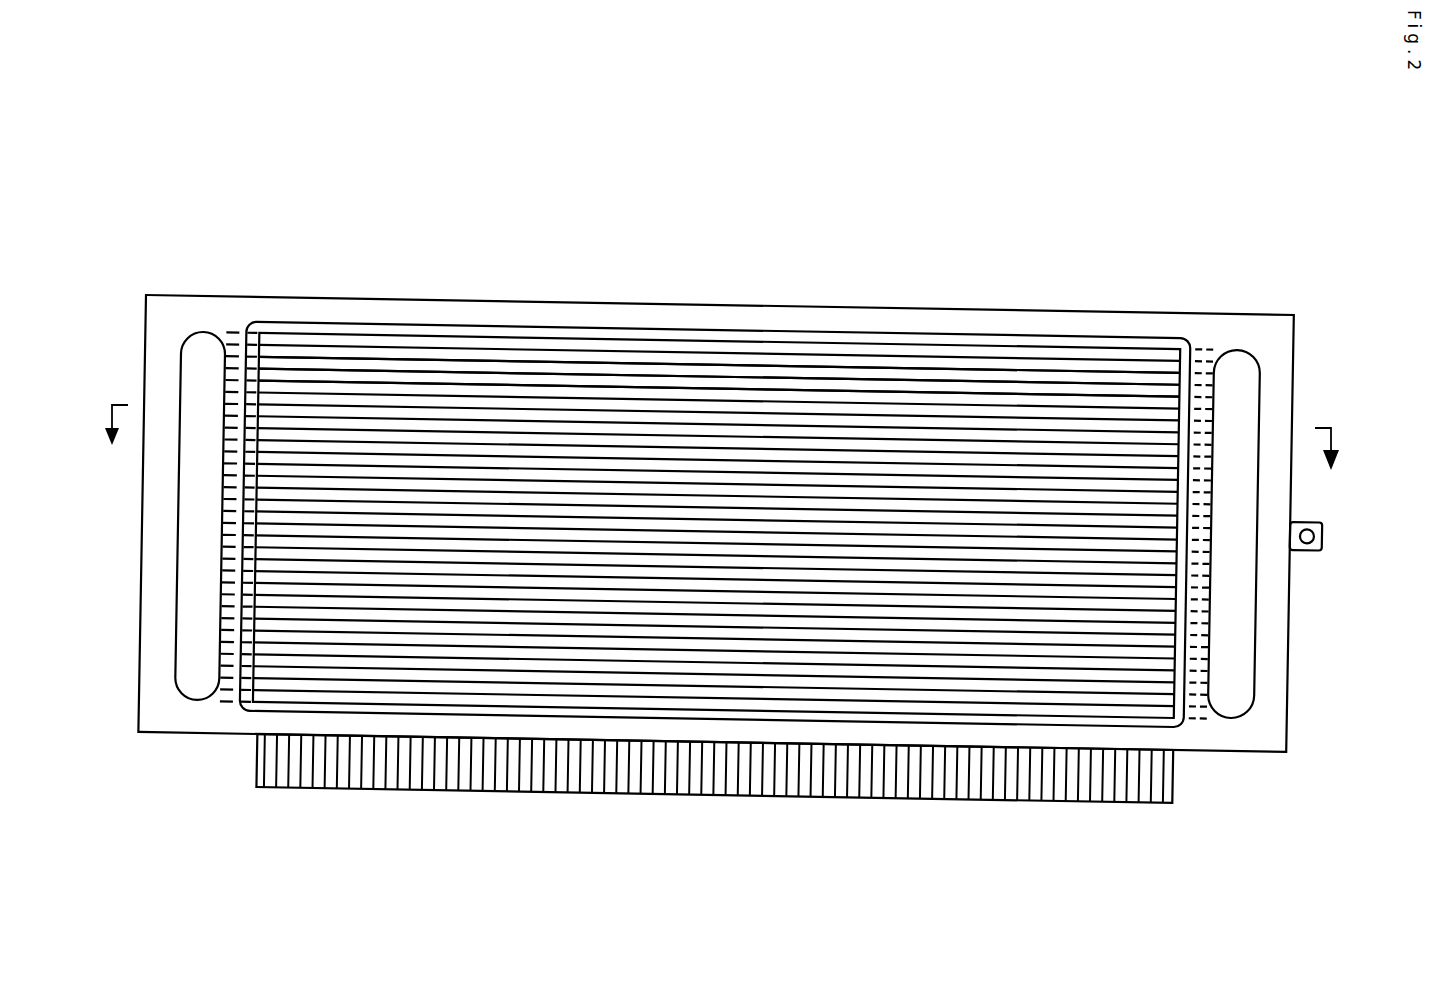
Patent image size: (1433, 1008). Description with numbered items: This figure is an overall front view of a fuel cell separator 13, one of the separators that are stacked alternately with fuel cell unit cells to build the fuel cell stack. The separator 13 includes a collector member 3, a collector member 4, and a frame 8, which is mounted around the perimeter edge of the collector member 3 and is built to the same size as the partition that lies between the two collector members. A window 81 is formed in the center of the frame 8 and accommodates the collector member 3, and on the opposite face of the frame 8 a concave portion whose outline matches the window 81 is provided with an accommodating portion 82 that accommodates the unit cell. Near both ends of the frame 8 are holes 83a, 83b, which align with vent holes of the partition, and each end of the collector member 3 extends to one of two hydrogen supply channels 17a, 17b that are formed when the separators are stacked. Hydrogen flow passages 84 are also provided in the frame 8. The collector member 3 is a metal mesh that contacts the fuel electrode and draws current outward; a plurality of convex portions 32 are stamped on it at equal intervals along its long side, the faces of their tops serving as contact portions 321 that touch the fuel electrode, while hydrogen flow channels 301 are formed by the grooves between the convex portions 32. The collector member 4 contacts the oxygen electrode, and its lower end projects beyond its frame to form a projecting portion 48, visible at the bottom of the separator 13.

The fuel cell separator 13 is at (1179, 240).
The frame 8 is at (1275, 325).
The hole 83a is at (182, 451).
The hydrogen supply channel 17a is at (205, 352).
The hole 83b is at (1234, 473).
The hydrogen supply channel 17b is at (1237, 366).
The window 81 is at (538, 337).
The accommodating portion 82 is at (347, 327).
The hydrogen flow passages 84 is at (1200, 370).
The collector member 3 is at (716, 469).
The hydrogen flow channels 301 is at (820, 350).
The convex portions 32 is at (700, 383).
The contact portions 321 is at (719, 306).
The collector member 4 is at (714, 823).
The projecting portion 48 is at (975, 805).